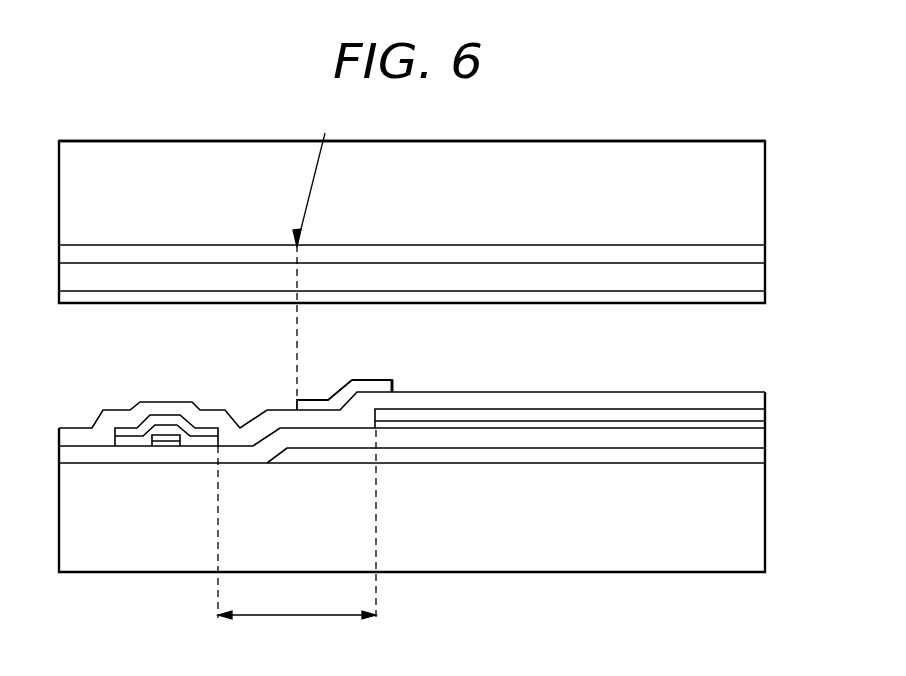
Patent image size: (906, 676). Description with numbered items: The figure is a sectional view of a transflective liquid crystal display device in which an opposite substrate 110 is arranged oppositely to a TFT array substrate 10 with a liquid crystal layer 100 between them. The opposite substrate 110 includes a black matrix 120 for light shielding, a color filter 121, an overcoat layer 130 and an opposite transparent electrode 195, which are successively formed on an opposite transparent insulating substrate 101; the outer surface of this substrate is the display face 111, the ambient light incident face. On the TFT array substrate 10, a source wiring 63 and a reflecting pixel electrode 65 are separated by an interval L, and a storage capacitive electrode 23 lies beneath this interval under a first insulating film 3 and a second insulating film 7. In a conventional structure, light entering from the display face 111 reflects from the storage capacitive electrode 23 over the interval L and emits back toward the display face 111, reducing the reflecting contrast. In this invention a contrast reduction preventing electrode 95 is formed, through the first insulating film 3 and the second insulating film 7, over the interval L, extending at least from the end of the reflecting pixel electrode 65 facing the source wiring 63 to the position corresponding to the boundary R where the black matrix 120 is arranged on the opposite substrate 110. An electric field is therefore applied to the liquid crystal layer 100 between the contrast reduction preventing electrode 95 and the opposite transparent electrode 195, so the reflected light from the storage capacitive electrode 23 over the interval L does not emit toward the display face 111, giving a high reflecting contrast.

The opposite substrate 110 is at (748, 307).
The opposite transparent insulating substrate 101 is at (180, 162).
The display face 111 is at (227, 141).
The black matrix 120 is at (108, 257).
The color filter 121 is at (524, 250).
The overcoat layer 130 is at (628, 277).
The opposite transparent electrode 195 is at (683, 297).
The liquid crystal layer 100 is at (313, 332).
The boundary R is at (314, 253).
The TFT array substrate 10 is at (698, 583).
The storage capacitive electrode 23 is at (538, 453).
The first insulating film 3 is at (83, 453).
The second insulating film 7 is at (618, 400).
The source wiring 63 is at (137, 442).
The reflecting pixel electrode 65 is at (475, 422).
The contrast reduction preventing electrode 95 is at (375, 387).
The interval L is at (297, 524).